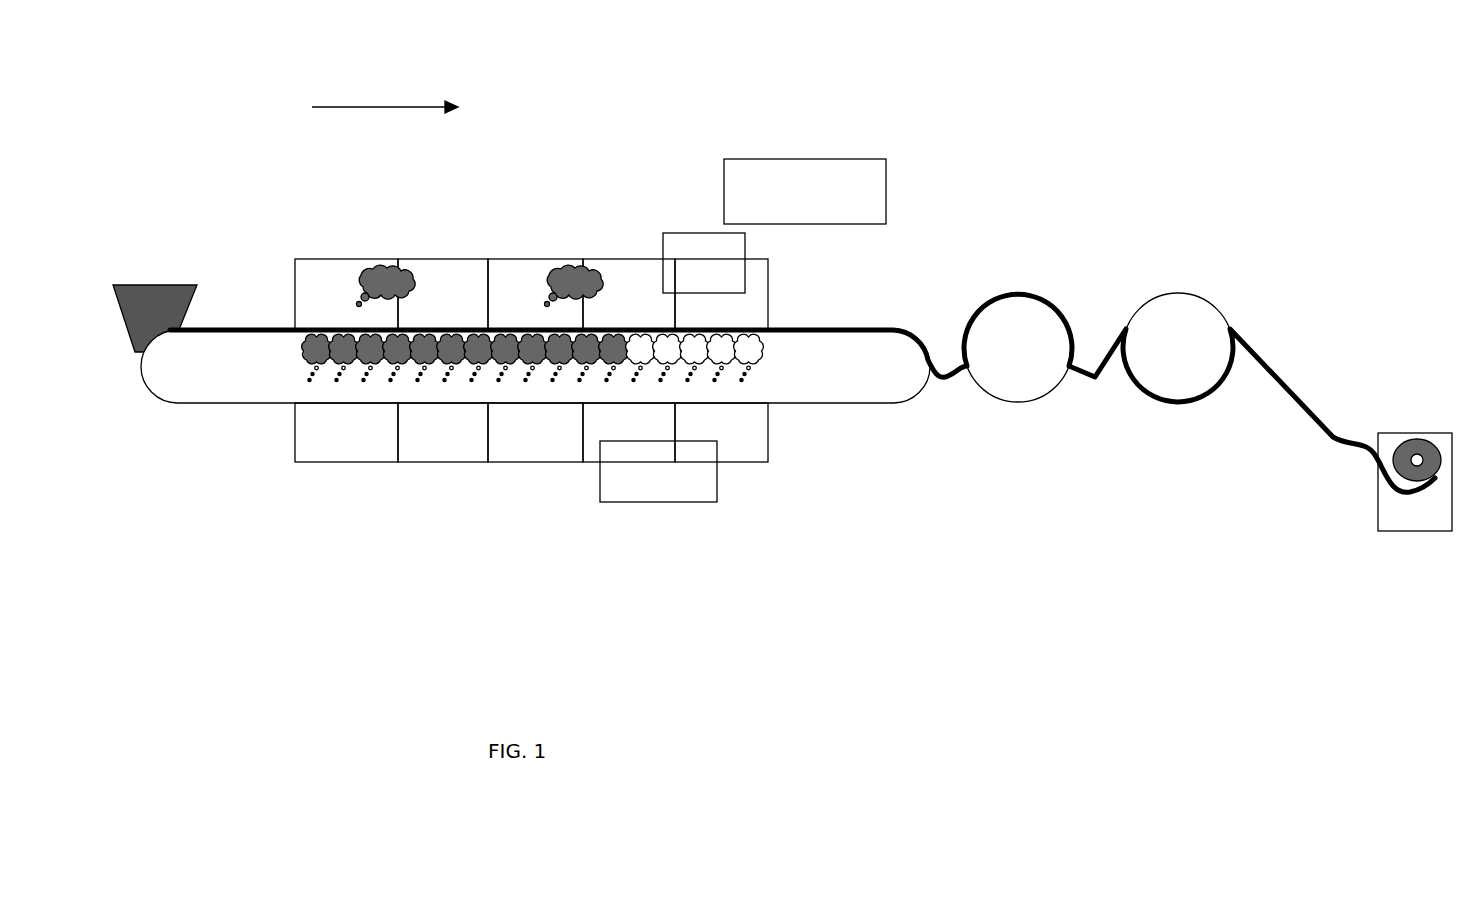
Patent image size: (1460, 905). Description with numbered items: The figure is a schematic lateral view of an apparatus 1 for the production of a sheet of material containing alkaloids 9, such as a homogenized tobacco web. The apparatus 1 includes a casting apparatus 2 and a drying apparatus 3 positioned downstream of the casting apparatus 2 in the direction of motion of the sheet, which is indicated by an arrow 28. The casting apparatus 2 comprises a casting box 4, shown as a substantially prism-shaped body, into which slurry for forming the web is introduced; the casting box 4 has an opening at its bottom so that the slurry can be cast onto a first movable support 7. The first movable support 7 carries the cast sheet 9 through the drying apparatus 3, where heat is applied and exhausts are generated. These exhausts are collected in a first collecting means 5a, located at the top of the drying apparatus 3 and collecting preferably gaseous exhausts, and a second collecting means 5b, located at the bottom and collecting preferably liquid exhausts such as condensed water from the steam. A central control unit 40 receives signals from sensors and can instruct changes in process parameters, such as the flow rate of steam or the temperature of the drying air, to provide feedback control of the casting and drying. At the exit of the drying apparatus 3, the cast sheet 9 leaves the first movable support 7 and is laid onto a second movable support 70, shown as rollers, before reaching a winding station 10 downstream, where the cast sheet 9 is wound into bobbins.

The apparatus 1 is at (770, 596).
The casting apparatus 2 is at (157, 247).
The drying apparatus 3 is at (566, 250).
The casting box 4 is at (123, 318).
The first collecting means 5a is at (675, 247).
The second collecting means 5b is at (629, 502).
The first movable support 7 is at (927, 388).
The sheet of material containing alkaloids 9 is at (835, 322).
The winding station 10 is at (1417, 513).
The arrow 28 is at (343, 106).
The central control unit 40 is at (858, 197).
The second movable support 70 is at (1175, 297).